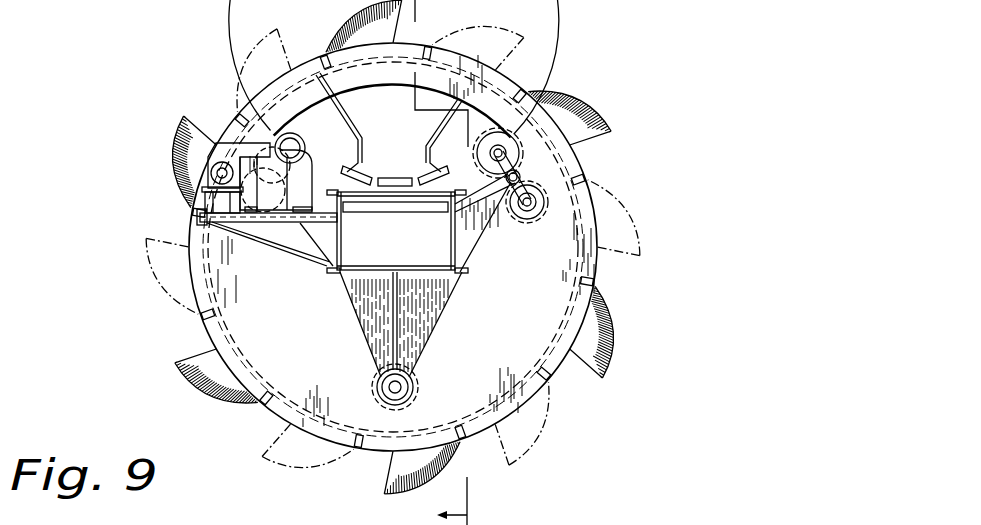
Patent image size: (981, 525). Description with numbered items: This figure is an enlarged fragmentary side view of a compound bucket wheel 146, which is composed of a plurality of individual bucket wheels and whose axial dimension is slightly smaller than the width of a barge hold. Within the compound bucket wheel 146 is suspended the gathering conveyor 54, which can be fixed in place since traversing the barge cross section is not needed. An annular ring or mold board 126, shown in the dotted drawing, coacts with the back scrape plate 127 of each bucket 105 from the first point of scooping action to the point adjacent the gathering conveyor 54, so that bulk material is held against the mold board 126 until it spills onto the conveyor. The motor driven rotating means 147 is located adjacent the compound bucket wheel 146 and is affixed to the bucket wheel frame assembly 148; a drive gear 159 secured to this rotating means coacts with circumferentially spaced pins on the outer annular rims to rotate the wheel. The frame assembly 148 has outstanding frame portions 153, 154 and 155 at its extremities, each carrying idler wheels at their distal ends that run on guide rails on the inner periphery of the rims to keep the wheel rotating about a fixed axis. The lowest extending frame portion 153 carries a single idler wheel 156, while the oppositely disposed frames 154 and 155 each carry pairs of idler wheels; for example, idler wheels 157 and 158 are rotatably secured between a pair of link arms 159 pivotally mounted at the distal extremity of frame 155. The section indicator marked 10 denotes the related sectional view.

The gathering conveyor 54 is at (353, 125).
The bucket 105 is at (387, 477).
The mold board 126 is at (258, 377).
The scrape plate 127 is at (462, 434).
The compound bucket wheel 146 is at (590, 165).
The motor driven rotating means 147 is at (200, 175).
The bucket wheel frame assembly 148 is at (343, 283).
The frame portion 153 is at (425, 338).
The frame portion 154 is at (318, 192).
The frame portion 155 is at (483, 227).
The idler wheel 156 is at (413, 389).
The idler wheel 157 is at (533, 193).
The idler wheel 158 is at (502, 133).
The link arms 159 is at (277, 145).
The section line 10 is at (435, 501).